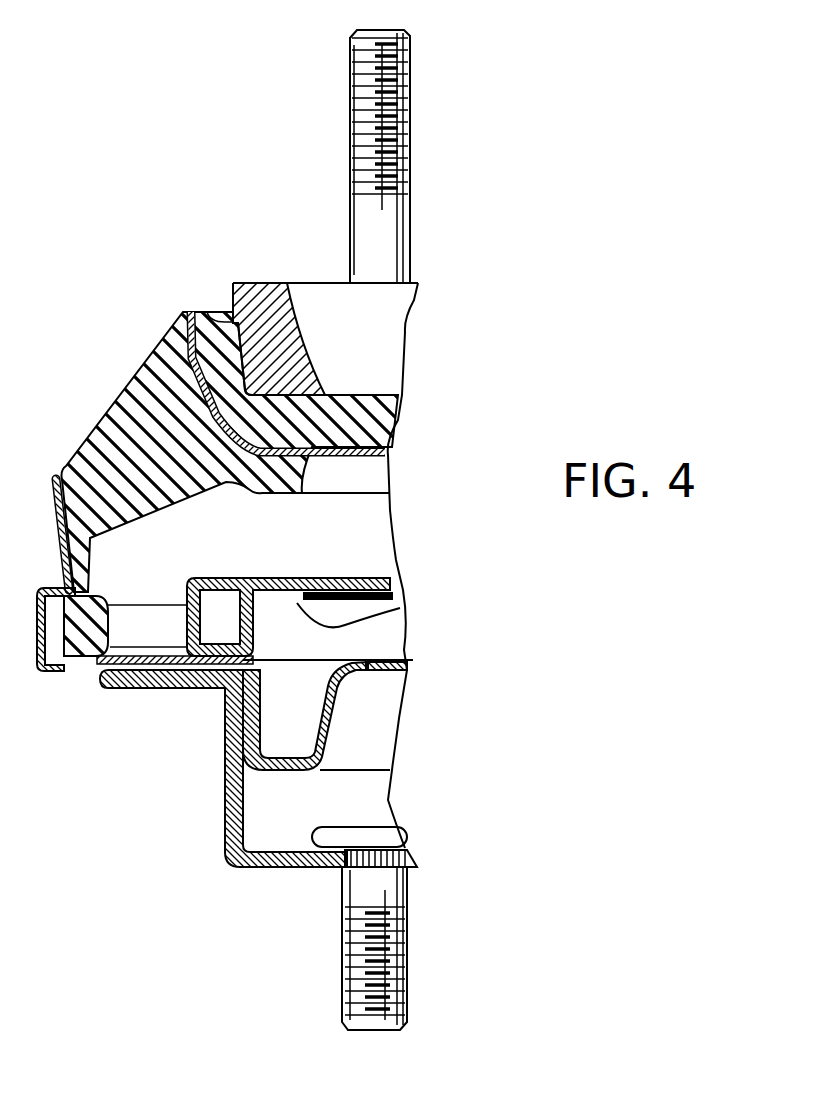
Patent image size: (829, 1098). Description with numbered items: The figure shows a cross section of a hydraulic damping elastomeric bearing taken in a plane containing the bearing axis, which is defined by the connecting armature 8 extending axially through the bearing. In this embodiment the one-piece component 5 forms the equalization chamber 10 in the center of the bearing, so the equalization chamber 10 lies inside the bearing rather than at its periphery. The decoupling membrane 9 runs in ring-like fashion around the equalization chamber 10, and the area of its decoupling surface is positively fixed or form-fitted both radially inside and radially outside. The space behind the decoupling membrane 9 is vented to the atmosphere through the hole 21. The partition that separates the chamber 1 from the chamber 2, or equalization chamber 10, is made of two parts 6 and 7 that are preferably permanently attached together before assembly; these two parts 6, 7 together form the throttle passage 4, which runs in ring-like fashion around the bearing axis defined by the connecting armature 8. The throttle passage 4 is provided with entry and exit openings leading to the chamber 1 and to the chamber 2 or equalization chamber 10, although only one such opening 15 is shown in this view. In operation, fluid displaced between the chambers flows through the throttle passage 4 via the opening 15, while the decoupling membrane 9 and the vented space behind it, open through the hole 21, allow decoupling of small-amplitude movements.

The chamber 1 is at (120, 557).
The chamber 2 is at (259, 575).
The throttle passage 4 is at (223, 603).
The one-piece component 5 is at (225, 712).
The part of the partition 6 is at (288, 589).
The part of the partition 7 is at (397, 615).
The connecting armature 8 is at (397, 120).
The decoupling membrane 9 is at (97, 690).
The equalization chamber 10 is at (225, 757).
The opening 15 is at (253, 630).
The hole 21 is at (143, 693).